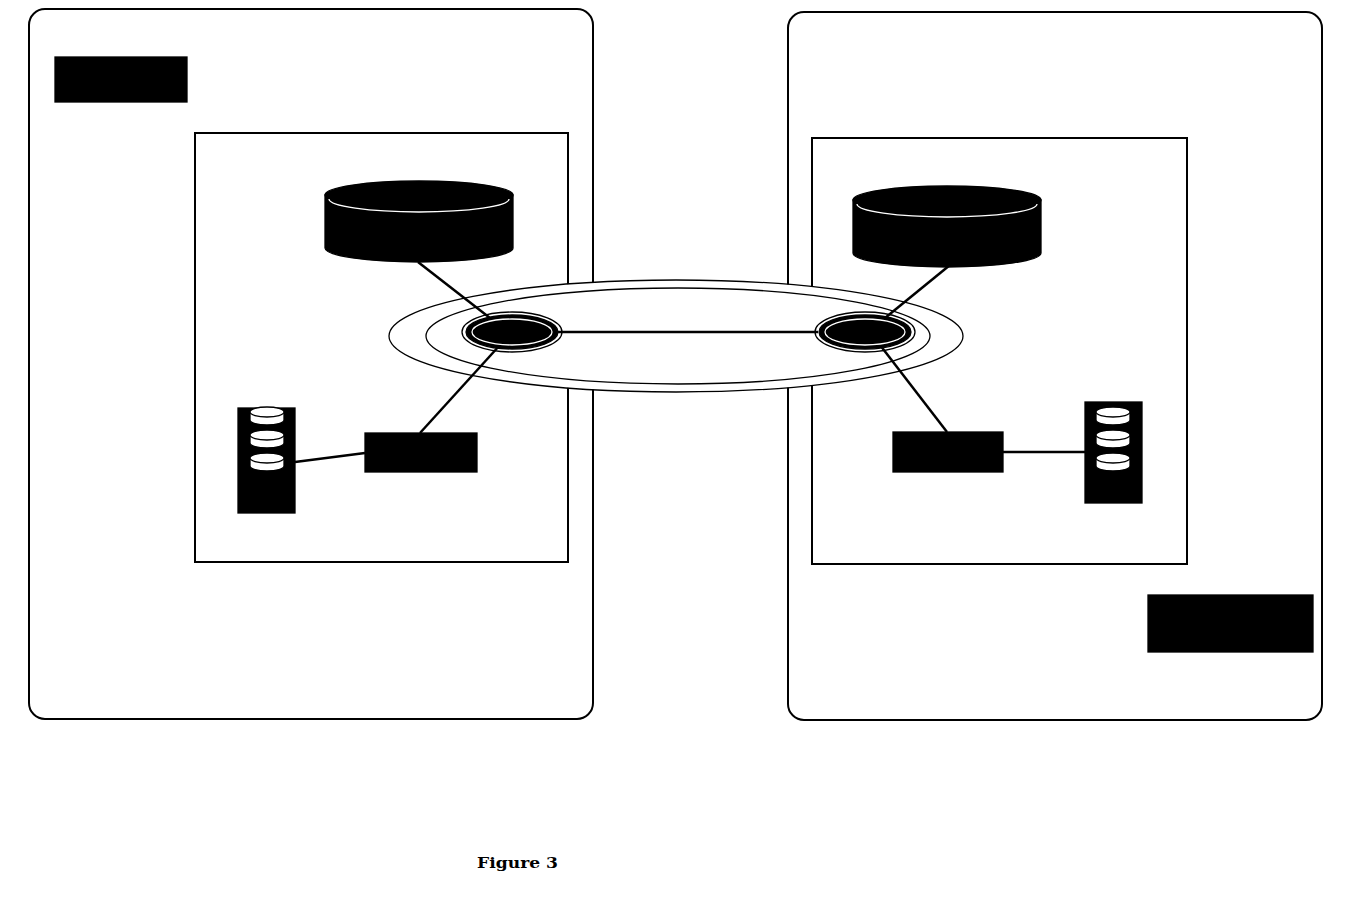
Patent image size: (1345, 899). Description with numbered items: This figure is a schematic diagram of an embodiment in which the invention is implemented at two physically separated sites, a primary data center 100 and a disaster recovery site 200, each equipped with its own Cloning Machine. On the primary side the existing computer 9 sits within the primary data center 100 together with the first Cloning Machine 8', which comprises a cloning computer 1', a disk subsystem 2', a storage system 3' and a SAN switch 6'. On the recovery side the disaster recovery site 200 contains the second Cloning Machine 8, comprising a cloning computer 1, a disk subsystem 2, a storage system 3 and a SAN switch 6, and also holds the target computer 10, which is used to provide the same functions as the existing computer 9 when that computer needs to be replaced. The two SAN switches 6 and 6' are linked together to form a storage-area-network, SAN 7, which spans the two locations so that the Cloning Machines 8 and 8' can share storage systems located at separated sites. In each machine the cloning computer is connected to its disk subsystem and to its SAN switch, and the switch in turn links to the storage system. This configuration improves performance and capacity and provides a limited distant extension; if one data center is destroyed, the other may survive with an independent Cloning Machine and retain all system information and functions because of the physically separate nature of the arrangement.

The cloning computer 1 is at (936, 468).
The cloning computer 1' is at (445, 468).
The disk subsystem 2 is at (1090, 471).
The disk subsystem 2' is at (312, 475).
The storage system 3 is at (947, 213).
The storage system 3' is at (419, 208).
The SAN switch 6 is at (925, 332).
The SAN switch 6' is at (453, 332).
The SAN 7 is at (676, 336).
The Cloning Machine 8 is at (999, 362).
The Cloning Machine 8' is at (381, 359).
The existing computer 9 is at (136, 68).
The target computer 10 is at (1230, 638).
The primary data center 100 is at (311, 364).
The disaster recovery site 200 is at (1055, 366).